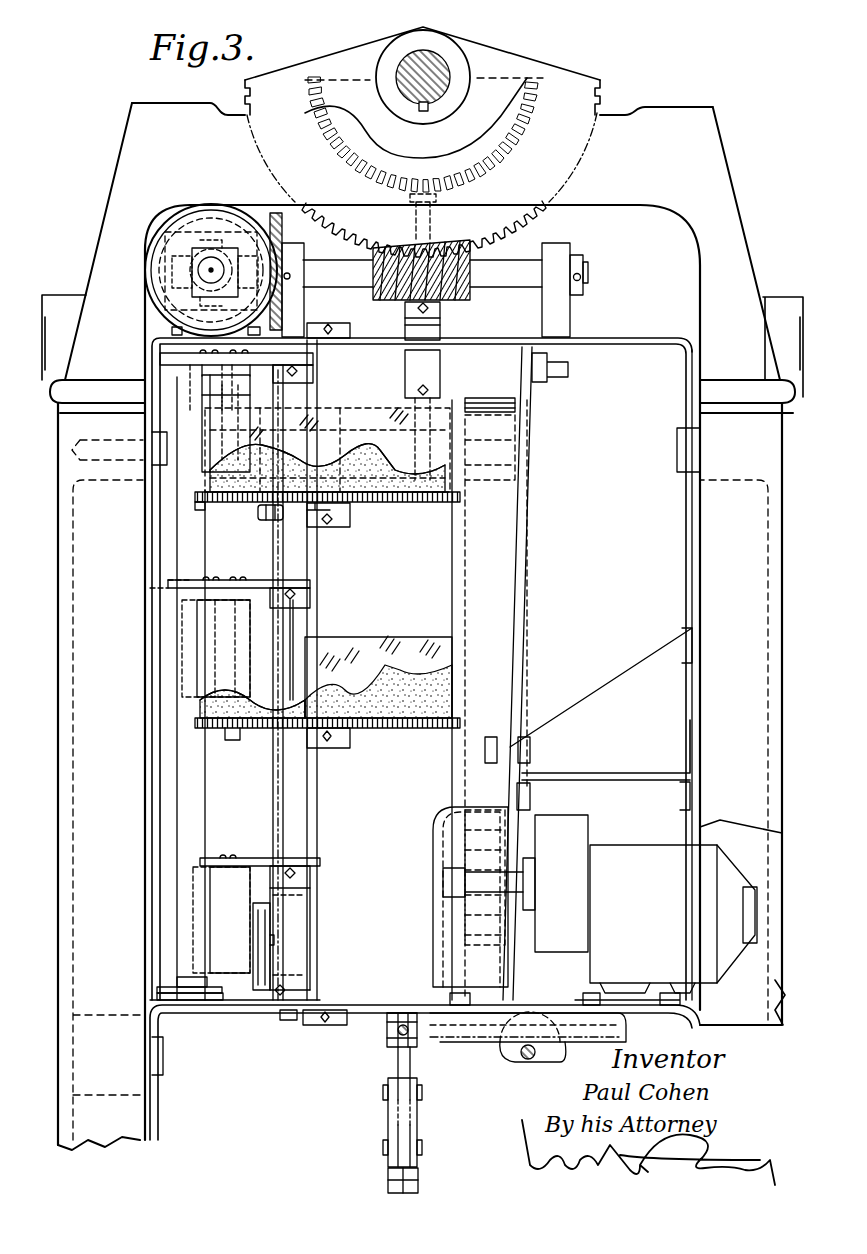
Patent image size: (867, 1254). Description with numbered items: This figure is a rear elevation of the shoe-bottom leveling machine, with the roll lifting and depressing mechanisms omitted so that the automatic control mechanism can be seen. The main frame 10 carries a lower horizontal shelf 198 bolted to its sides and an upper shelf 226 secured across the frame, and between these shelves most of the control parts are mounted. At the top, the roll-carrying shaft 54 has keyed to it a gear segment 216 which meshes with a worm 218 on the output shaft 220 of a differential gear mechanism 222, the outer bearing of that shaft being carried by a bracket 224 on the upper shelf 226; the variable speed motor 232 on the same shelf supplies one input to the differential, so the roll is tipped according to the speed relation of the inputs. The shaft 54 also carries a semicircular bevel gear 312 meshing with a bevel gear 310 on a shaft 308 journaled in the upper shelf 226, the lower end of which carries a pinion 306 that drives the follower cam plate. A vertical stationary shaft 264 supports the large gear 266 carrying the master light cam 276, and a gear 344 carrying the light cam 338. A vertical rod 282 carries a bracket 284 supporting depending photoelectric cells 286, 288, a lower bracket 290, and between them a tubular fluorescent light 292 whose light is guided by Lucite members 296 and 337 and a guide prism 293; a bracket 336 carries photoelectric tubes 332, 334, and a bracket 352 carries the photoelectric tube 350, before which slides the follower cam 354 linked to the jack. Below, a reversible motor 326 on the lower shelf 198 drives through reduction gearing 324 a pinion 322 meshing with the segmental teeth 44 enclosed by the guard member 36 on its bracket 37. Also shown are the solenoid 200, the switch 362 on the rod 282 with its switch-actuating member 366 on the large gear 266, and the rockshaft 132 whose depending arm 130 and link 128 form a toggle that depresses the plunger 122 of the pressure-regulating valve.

The main frame 10 is at (712, 568).
The guard member 36 is at (530, 604).
The bracket 37 is at (560, 772).
The segmental teeth 44 is at (485, 398).
The shaft 54 is at (433, 70).
The plunger 122 is at (386, 1182).
The link 128 is at (387, 1101).
The depending arm 130 is at (385, 1060).
The rockshaft 132 is at (432, 1008).
The lower horizontal shelf 198 is at (242, 1010).
The solenoid 200 is at (500, 1040).
The gear segment 216 is at (562, 64).
The worm 218 is at (454, 286).
The output shaft 220 is at (496, 278).
The differential gear mechanism 222 is at (215, 232).
The bracket 224 is at (558, 255).
The upper shelf 226 is at (604, 338).
The variable speed motor 232 is at (188, 223).
The vertical stationary shaft 264 is at (330, 876).
The large gear 266 is at (402, 496).
The master light cam 276 is at (346, 422).
The vertical rod 282 is at (300, 558).
The bracket 284 is at (262, 356).
The photoelectric cell 286 is at (213, 508).
The photoelectric cell 288 is at (265, 402).
The bracket 290 is at (220, 1000).
The tubular fluorescent light 292 is at (184, 548).
The Lucite guide prism 293 is at (222, 900).
The Lucite member 296 is at (218, 450).
The pinion 306 is at (458, 476).
The shaft 308 is at (408, 302).
The bevel gear 310 is at (467, 198).
The semicircular bevel gear 312 is at (530, 126).
The pinion 322 is at (487, 938).
The reduction gearing 324 is at (563, 818).
The reversible motor 326 is at (617, 845).
The photoelectric tube 332 is at (235, 728).
The photoelectric tube 334 is at (300, 625).
The bracket 336 is at (230, 580).
The Lucite member 337 is at (213, 617).
The light cam 338 is at (427, 624).
The gear 344 is at (403, 723).
The photoelectric tube 350 is at (305, 987).
The bracket 352 is at (273, 862).
The follower cam 354 is at (265, 926).
The switch 362 is at (258, 519).
The switch-actuating member 366 is at (338, 513).